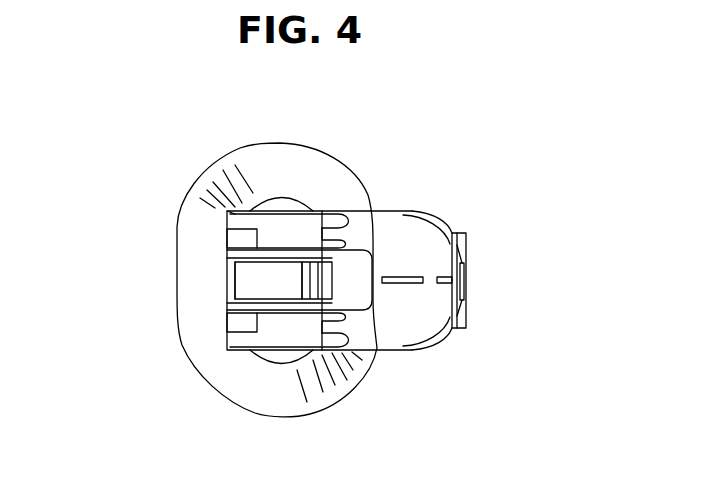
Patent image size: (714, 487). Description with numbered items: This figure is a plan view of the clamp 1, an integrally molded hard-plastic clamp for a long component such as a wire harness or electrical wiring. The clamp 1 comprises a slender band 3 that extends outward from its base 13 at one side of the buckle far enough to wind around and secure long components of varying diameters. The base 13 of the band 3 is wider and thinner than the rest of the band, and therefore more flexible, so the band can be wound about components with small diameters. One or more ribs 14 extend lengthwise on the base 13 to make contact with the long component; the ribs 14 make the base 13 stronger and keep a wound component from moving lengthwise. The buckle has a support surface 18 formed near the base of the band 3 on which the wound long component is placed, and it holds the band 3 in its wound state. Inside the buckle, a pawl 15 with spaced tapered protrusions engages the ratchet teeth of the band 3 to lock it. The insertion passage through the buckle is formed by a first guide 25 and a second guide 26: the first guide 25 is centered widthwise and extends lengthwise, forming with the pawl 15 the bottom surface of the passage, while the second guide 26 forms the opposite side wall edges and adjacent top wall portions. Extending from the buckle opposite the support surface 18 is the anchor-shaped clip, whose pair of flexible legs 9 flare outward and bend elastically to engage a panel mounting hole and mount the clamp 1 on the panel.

The clamp 1 is at (414, 132).
The slender band 3 is at (474, 249).
The legs 9 is at (197, 232).
The base 13 is at (367, 328).
The ribs 14 is at (404, 277).
The pawl 15 is at (316, 280).
The support surface 18 is at (274, 216).
The first guide 25 is at (253, 282).
The second guide 26 is at (292, 232).